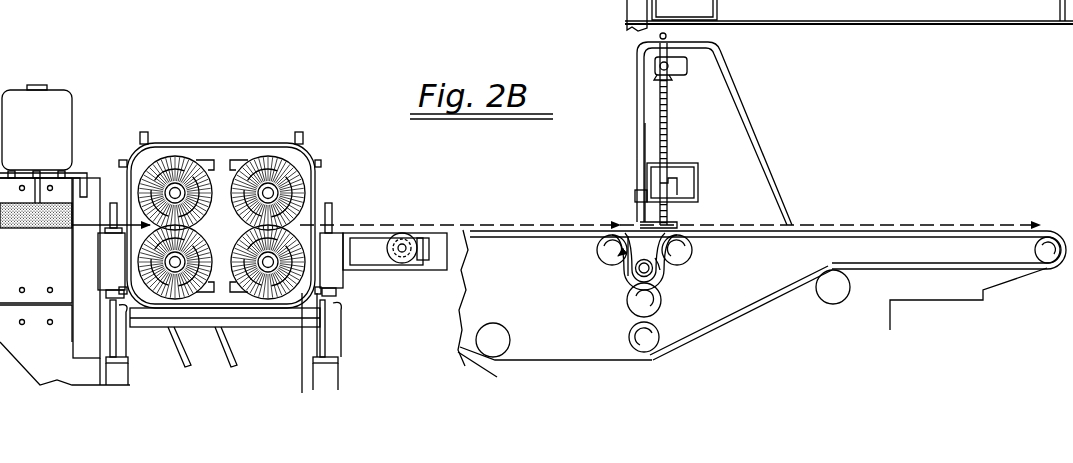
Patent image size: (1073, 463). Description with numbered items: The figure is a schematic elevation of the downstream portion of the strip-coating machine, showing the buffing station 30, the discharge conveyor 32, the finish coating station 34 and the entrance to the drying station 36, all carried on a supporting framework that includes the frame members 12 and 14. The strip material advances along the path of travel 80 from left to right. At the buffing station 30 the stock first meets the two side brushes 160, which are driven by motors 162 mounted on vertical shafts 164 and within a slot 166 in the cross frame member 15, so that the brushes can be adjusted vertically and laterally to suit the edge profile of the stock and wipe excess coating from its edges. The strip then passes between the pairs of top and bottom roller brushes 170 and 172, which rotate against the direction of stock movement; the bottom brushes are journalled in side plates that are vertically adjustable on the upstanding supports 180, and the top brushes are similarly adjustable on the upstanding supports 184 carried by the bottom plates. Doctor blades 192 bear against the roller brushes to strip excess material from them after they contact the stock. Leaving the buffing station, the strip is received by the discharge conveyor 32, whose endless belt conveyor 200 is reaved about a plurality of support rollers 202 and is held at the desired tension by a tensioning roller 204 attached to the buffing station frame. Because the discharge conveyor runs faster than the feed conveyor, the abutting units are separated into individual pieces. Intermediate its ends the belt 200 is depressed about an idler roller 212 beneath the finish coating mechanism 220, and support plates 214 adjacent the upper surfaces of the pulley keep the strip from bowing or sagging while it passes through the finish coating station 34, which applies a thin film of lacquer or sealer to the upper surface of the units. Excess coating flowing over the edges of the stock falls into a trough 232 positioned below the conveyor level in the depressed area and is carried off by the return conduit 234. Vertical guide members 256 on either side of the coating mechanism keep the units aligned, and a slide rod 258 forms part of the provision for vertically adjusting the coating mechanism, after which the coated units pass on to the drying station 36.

The frame member 12 is at (600, 0).
The frame member 14 is at (325, 376).
The cross frame member 15 is at (80, 176).
The buffing station 30 is at (117, 125).
The discharge conveyor 32 is at (388, 203).
The finish coating station 34 is at (608, 170).
The drying station 36 is at (759, 260).
The path of travel 80 is at (97, 220).
The side brushes 160 is at (45, 225).
The motors 162 is at (46, 138).
The vertical shafts 164 is at (42, 186).
The slot 166 is at (40, 186).
The top roller brushes 170 is at (204, 200).
The bottom roller brushes 172 is at (250, 254).
The upstanding supports 180 is at (332, 210).
The upstanding supports 184 is at (147, 142).
The doctor blades 192 is at (242, 158).
The endless belt conveyor 200 is at (770, 298).
The support rollers 202 is at (505, 330).
The tensioning roller 204 is at (408, 262).
The idler roller 212 is at (660, 302).
The support plates 214 is at (428, 240).
The finish coating mechanism 220 is at (714, 160).
The trough 232 is at (638, 273).
The return conduit 234 is at (662, 268).
The vertical guide members 256 is at (672, 211).
The slide rod 258 is at (668, 130).